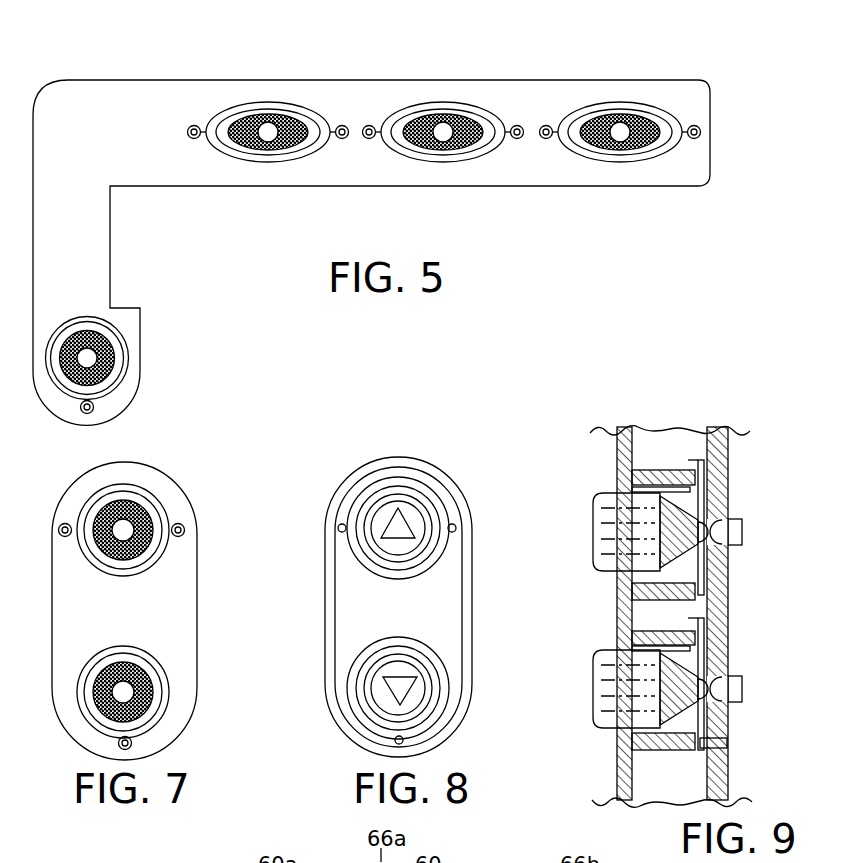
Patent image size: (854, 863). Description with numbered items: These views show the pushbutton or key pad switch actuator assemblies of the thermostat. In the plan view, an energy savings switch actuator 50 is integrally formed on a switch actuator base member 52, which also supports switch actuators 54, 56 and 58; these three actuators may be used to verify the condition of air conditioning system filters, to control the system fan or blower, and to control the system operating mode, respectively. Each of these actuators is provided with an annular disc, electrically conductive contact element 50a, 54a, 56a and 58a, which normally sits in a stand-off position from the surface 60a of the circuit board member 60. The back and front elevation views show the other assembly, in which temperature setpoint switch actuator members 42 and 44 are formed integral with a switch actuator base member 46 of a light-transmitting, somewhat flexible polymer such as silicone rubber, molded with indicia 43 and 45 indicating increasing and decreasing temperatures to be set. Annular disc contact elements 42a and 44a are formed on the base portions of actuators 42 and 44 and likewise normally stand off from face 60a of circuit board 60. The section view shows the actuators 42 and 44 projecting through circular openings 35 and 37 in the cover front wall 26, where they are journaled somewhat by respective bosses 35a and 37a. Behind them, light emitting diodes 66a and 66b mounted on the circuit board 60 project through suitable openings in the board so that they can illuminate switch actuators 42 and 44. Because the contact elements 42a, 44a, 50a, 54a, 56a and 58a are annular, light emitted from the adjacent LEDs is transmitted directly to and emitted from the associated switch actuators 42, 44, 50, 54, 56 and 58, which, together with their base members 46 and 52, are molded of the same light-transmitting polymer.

In FIG. 9, the cover front wall 26 is at (615, 453).
In FIG. 9, the circular opening 35 is at (597, 503).
In FIG. 9, the boss 35a is at (673, 470).
In FIG. 9, the circular opening 37 is at (627, 653).
In FIG. 9, the boss 37a is at (645, 750).
In FIG. 8, the switch actuator member 42 is at (433, 507).
In FIG. 9, the switch actuator member 42 is at (607, 536).
In FIG. 7, the contact element 42a is at (155, 512).
In FIG. 9, the contact element 42a is at (705, 510).
In FIG. 8, the indicia 43 is at (407, 543).
In FIG. 8, the switch actuator member 44 is at (377, 707).
In FIG. 9, the switch actuator member 44 is at (605, 679).
In FIG. 7, the contact element 44a is at (145, 702).
In FIG. 9, the contact element 44a is at (735, 710).
In FIG. 8, the indicia 45 is at (407, 695).
In FIG. 7, the switch actuator base member 46 is at (197, 628).
In FIG. 8, the switch actuator base member 46 is at (325, 647).
In FIG. 9, the switch actuator base member 46 is at (728, 594).
In FIG. 5, the energy savings switch actuator 50 is at (115, 343).
In FIG. 5, the contact element 50a is at (103, 365).
In FIG. 5, the switch actuator base member 52 is at (152, 187).
In FIG. 5, the switch actuator 54 is at (318, 118).
In FIG. 5, the contact element 54a is at (237, 128).
In FIG. 5, the switch actuator 56 is at (492, 113).
In FIG. 5, the contact element 56a is at (475, 120).
In FIG. 5, the switch actuator 58 is at (657, 110).
In FIG. 5, the contact element 58a is at (590, 117).
In FIG. 9, the circuit board member 60 is at (717, 461).
In FIG. 9, the surface 60a is at (705, 780).
In FIG. 9, the light emitting diode 66a is at (743, 535).
In FIG. 9, the light emitting diode 66b is at (745, 687).